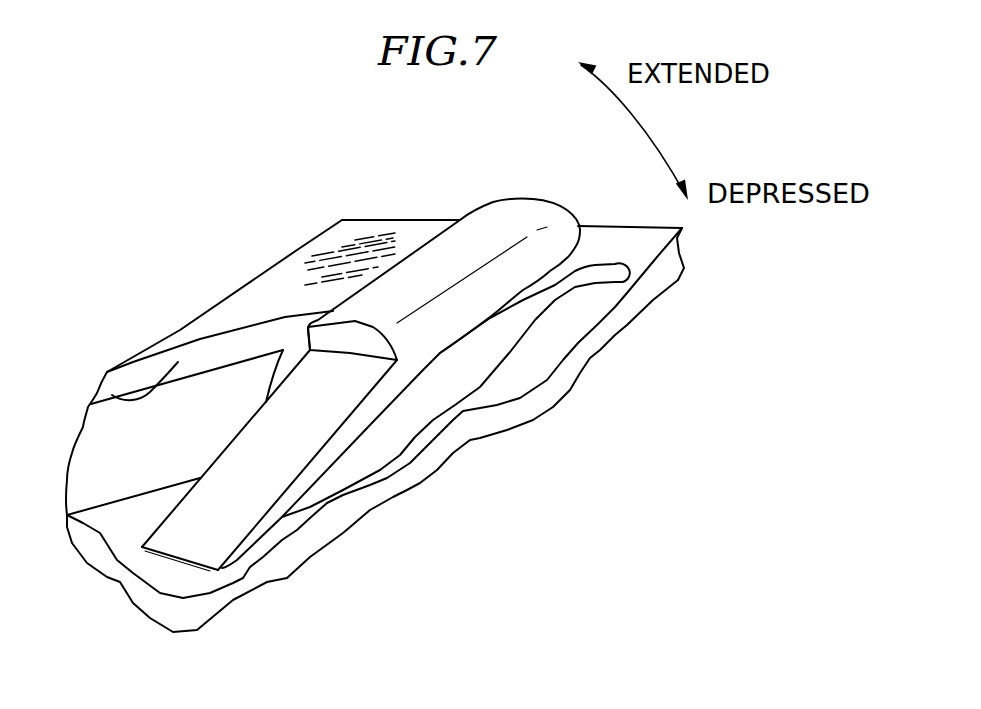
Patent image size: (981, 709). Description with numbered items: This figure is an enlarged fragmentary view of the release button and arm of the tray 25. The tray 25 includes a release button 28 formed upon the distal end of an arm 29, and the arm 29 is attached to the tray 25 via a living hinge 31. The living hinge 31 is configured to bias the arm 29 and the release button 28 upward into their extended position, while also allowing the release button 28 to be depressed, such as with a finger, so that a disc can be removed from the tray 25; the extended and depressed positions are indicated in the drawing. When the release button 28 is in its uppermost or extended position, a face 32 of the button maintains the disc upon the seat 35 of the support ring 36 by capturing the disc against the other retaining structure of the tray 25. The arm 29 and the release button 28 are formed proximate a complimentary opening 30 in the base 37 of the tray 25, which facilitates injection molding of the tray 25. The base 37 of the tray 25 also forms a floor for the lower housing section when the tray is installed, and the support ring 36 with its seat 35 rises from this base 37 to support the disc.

The tray 25 is at (113, 322).
The release button 28 is at (530, 213).
The arm 29 is at (260, 443).
The complimentary opening 30 is at (568, 277).
The living hinge 31 is at (185, 563).
The face 32 is at (365, 340).
The seat 35 is at (112, 395).
The support ring 36 is at (85, 477).
The base 37 is at (340, 250).